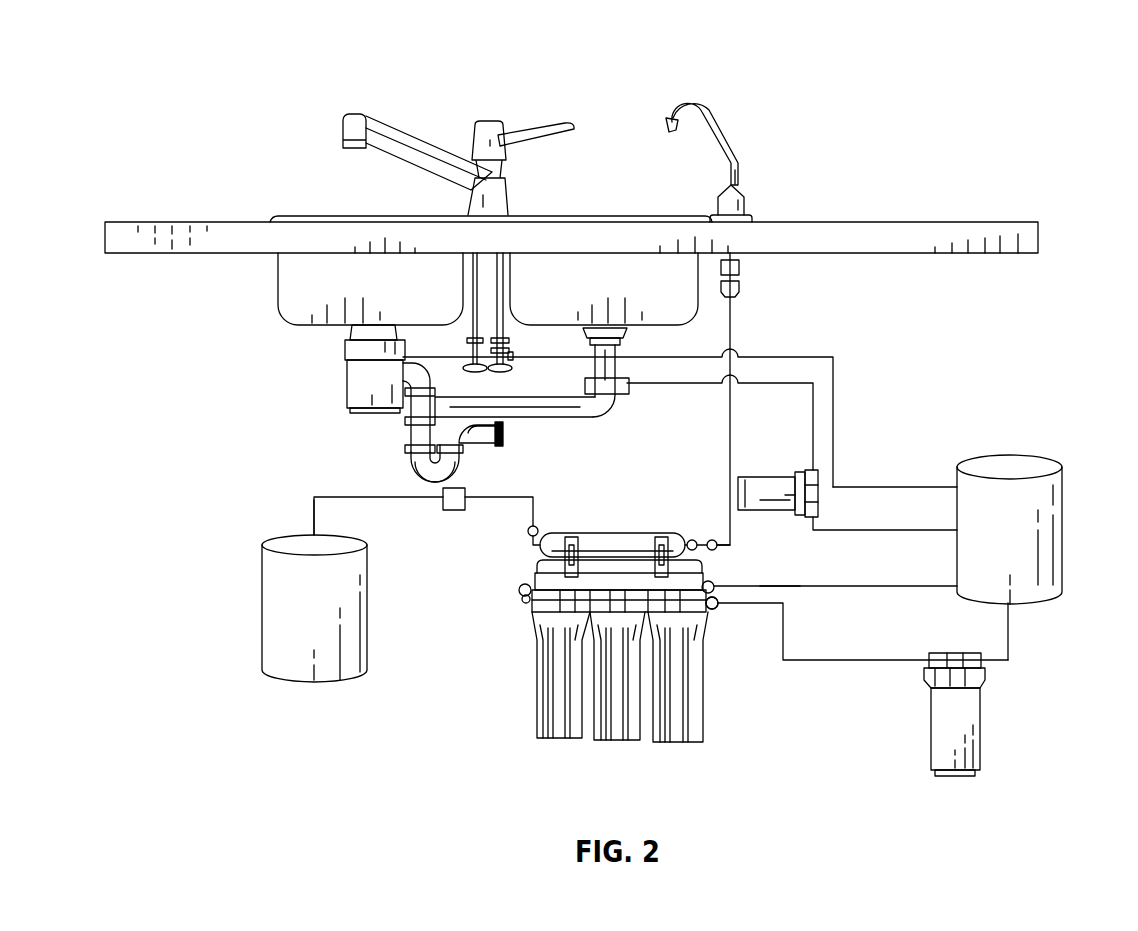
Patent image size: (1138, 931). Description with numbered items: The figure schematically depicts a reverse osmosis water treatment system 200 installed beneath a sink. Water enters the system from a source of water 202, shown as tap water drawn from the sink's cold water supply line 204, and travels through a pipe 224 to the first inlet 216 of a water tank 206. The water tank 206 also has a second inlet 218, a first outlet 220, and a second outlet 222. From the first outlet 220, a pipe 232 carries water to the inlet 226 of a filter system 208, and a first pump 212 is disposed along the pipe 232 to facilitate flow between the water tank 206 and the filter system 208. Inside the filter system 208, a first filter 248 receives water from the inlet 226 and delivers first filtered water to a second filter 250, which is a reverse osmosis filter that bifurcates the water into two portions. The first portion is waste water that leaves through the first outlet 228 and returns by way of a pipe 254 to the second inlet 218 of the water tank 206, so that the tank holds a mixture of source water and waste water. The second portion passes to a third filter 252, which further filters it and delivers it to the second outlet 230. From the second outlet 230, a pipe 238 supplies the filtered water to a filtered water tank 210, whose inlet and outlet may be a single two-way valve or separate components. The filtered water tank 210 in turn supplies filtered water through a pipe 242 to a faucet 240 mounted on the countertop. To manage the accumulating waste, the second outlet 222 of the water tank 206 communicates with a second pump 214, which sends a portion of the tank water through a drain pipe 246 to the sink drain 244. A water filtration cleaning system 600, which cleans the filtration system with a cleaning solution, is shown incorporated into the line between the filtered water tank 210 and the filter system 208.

The reverse osmosis water treatment system 200 is at (188, 66).
The source of water 202 is at (512, 352).
The cold water supply line 204 is at (505, 275).
The water tank 206 is at (1032, 457).
The filter system 208 is at (622, 533).
The filtered water tank 210 is at (262, 608).
The first pump 212 is at (932, 725).
The second pump 214 is at (770, 477).
The first inlet 216 is at (957, 487).
The second inlet 218 is at (957, 586).
The first outlet 220 is at (1010, 603).
The second outlet 222 is at (957, 530).
The pipe 224 is at (835, 395).
The inlet 226 is at (714, 610).
The first outlet 228 is at (712, 582).
The second outlet 230 is at (528, 533).
The pipe 232 is at (810, 660).
The pipe 238 is at (350, 497).
The faucet 240 is at (727, 140).
The pipe 242 is at (728, 450).
The drain 244 is at (610, 410).
The drain pipe 246 is at (788, 382).
The first filter 248 is at (703, 698).
The second filter 250 is at (622, 742).
The third filter 252 is at (537, 690).
The pipe 254 is at (783, 585).
The water filtration cleaning system 600 is at (443, 505).